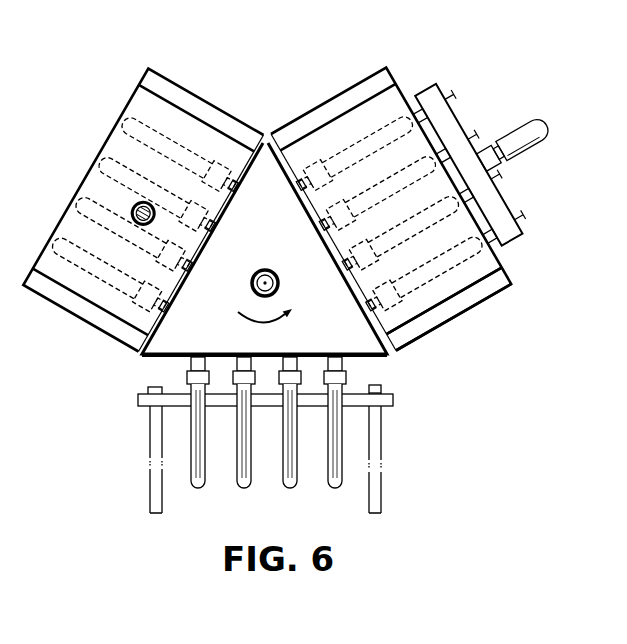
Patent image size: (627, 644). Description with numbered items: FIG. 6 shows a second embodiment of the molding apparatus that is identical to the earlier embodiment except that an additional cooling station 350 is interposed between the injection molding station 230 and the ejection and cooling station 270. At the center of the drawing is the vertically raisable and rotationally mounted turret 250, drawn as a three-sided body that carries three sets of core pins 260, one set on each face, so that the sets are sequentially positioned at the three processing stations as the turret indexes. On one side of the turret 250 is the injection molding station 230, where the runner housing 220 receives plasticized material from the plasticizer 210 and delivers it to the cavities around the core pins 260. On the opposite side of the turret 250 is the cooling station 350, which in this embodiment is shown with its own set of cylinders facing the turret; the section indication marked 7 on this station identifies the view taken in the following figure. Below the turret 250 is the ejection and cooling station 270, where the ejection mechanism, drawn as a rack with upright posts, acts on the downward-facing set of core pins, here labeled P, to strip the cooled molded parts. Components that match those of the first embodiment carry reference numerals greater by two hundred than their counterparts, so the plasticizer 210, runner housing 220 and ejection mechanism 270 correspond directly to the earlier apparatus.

The section line of FIG. 7 is at (233, 94).
The plasticizer 210 is at (548, 158).
The runner housing 220 is at (526, 263).
The injection molding station 230 is at (445, 345).
The turret 250 is at (390, 367).
The core pins 260 is at (453, 257).
The ejection and cooling station 270 is at (133, 427).
The cooling station 350 is at (108, 365).
The pins P is at (289, 489).